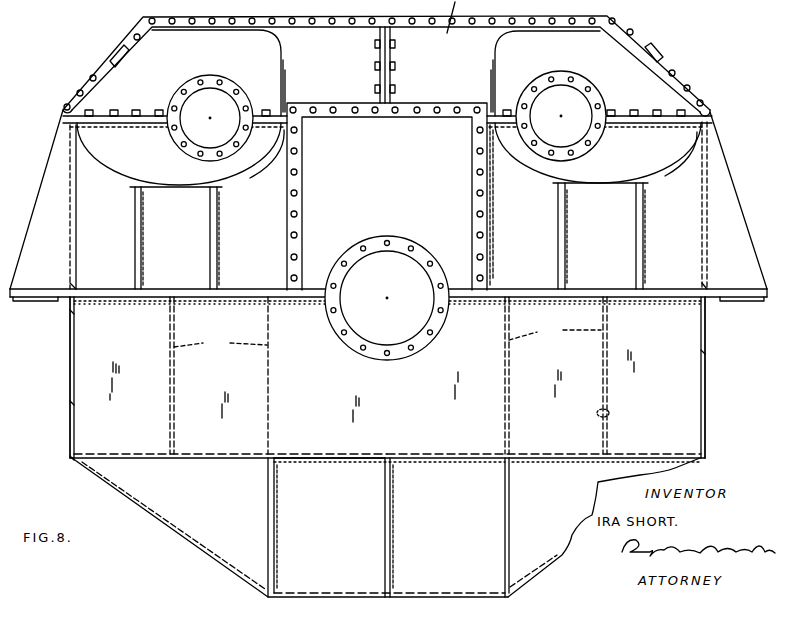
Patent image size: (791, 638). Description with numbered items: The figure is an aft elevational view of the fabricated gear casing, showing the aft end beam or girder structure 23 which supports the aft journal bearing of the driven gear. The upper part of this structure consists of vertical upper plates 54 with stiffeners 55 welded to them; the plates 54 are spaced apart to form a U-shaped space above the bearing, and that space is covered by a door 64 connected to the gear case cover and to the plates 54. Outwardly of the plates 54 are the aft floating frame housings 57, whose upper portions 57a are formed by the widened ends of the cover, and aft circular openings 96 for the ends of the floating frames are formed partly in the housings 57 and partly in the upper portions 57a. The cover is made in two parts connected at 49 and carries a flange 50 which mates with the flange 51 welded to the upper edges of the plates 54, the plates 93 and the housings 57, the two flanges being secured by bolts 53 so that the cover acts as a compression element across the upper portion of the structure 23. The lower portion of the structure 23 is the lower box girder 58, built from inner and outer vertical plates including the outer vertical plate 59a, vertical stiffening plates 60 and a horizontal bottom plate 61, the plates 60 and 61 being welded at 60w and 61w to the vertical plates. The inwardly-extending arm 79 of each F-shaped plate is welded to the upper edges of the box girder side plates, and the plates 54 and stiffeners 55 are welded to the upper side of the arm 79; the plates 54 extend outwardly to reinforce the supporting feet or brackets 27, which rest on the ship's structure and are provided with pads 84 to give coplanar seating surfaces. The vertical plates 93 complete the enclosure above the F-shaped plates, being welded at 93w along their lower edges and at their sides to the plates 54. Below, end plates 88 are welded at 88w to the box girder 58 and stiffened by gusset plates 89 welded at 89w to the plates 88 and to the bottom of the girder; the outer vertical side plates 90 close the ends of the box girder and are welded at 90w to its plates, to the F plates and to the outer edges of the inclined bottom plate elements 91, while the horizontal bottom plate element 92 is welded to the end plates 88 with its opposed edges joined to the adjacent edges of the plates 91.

The aft end beam or girder structure 23 is at (267, 232).
The supporting feet or brackets 27 is at (38, 302).
The connection of cover parts 49 is at (390, 78).
The cover flange 50 is at (103, 122).
The girder flange 51 is at (107, 125).
The bolts 53 is at (138, 124).
The vertical upper plates 54 is at (82, 208).
The stiffeners 55 is at (207, 257).
The aft floating frame housings 57 is at (175, 181).
The aft upper housing portions 57a is at (258, 54).
The lower box girder 58 is at (325, 388).
The outer vertical plate 59a is at (677, 417).
The vertical stiffening plates 60 is at (388, 375).
The weld 60w is at (608, 414).
The horizontal bottom plate 61 is at (308, 455).
The weld 61w is at (537, 455).
The door 64 is at (340, 145).
The inwardly-extending arm 79 is at (163, 300).
The pads 84 is at (50, 294).
The end plates 88 is at (352, 529).
The weld 88w is at (340, 458).
The gusset plates 89 is at (390, 542).
The weld 89w is at (387, 563).
The outer vertical side plates 90 is at (72, 440).
The weld 90w is at (72, 312).
The inclined bottom plate elements 91 is at (183, 536).
The horizontal bottom plate element 92 is at (450, 578).
The vertical plates 93 is at (70, 248).
The weld 93w is at (72, 287).
The aft circular openings 96 is at (220, 92).